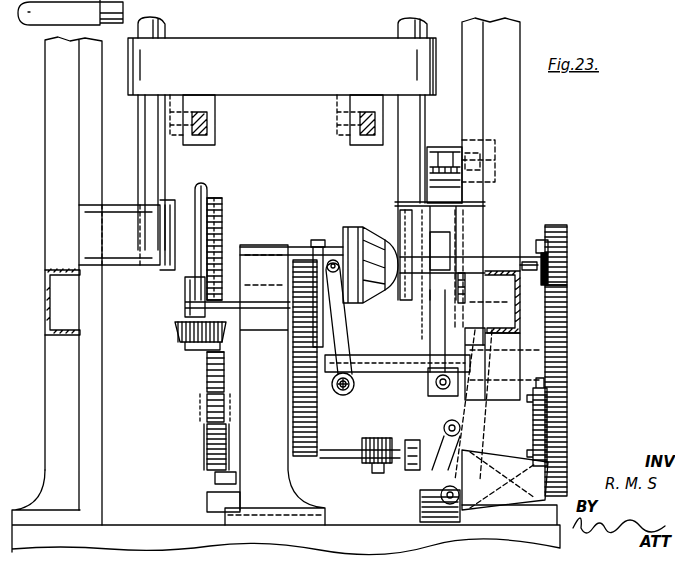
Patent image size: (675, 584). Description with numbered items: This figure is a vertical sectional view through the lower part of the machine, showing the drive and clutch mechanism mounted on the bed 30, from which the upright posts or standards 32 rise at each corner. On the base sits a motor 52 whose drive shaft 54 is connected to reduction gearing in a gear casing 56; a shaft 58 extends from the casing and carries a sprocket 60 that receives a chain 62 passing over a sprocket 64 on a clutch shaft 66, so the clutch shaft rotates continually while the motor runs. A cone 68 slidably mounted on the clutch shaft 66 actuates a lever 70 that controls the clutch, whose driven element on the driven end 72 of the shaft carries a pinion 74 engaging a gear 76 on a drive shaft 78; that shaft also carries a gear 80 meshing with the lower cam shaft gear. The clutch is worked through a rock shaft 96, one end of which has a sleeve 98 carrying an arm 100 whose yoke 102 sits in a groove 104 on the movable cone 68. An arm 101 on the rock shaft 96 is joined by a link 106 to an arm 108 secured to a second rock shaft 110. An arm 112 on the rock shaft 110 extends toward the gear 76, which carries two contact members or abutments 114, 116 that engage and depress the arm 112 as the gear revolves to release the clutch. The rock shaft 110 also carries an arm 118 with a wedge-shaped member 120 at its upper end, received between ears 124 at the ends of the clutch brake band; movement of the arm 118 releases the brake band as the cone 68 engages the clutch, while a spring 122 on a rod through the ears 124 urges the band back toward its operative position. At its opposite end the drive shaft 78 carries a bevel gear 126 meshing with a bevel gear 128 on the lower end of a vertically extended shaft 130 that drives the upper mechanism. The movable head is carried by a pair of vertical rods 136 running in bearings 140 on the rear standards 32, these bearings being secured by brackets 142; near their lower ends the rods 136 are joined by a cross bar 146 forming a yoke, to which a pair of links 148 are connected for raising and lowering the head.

The bed 30 is at (126, 527).
The upright posts or standards 32 is at (46, 135).
The motor 52 is at (428, 466).
The drive shaft 54 is at (358, 460).
The gear casing 56 is at (222, 496).
The shaft 58 is at (223, 478).
The sprocket 60 is at (206, 458).
The chain 62 is at (208, 402).
The sprocket 64 is at (232, 216).
The clutch shaft 66 is at (238, 245).
The cone 68 is at (364, 237).
The lever 70 is at (375, 228).
The driven end 72 is at (528, 256).
The pinion 74 is at (543, 238).
The gear 76 is at (569, 242).
The drive shaft 78 is at (386, 354).
The gear 80 is at (305, 452).
The rock shaft 96 is at (355, 383).
The sleeve 98 is at (367, 391).
The arm 100 is at (340, 322).
The arm 101 is at (356, 404).
The yoke 102 is at (333, 258).
The groove 104 is at (318, 240).
The link 106 is at (412, 470).
The arm 108 is at (420, 492).
The rock shaft 110 is at (448, 506).
The arm 112 is at (508, 492).
The contact member or abutment 114 is at (566, 432).
The contact member or abutment 116 is at (569, 330).
The arm 118 is at (478, 448).
The wedge-shaped member 120 is at (474, 345).
The spring 122 is at (439, 332).
The ears 124 is at (437, 396).
The bevel gear 126 is at (208, 373).
The bevel gear 128 is at (176, 330).
The vertically extended shaft 130 is at (198, 258).
The movable vertical rods 136 is at (160, 160).
The bearings 140 is at (402, 208).
The arms or brackets 142 is at (468, 220).
The cross bar 146 is at (305, 48).
The links 148 is at (208, 136).